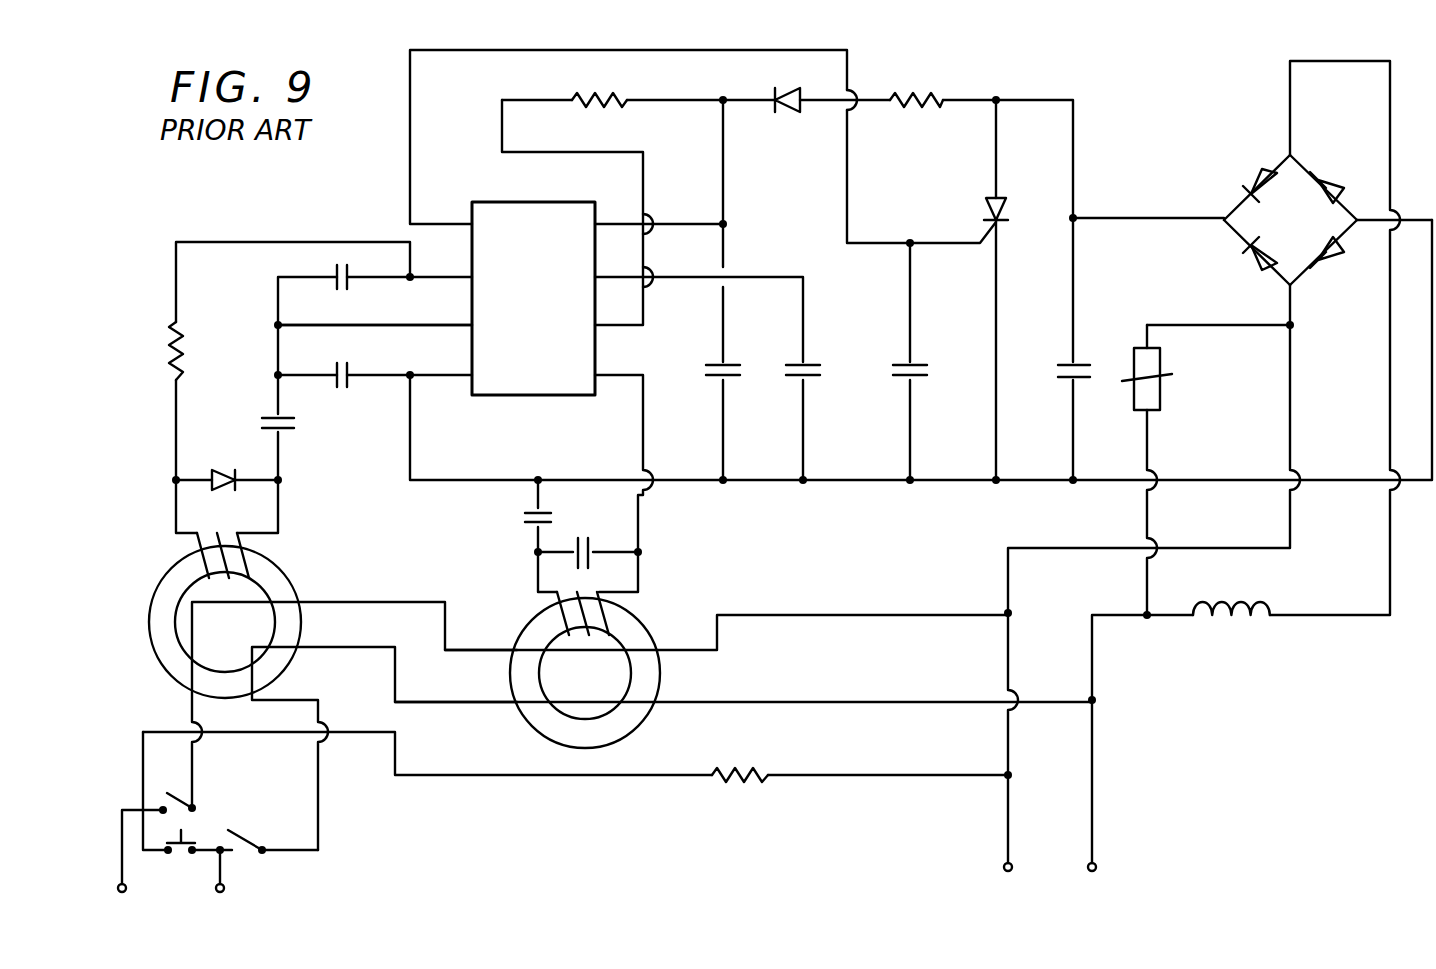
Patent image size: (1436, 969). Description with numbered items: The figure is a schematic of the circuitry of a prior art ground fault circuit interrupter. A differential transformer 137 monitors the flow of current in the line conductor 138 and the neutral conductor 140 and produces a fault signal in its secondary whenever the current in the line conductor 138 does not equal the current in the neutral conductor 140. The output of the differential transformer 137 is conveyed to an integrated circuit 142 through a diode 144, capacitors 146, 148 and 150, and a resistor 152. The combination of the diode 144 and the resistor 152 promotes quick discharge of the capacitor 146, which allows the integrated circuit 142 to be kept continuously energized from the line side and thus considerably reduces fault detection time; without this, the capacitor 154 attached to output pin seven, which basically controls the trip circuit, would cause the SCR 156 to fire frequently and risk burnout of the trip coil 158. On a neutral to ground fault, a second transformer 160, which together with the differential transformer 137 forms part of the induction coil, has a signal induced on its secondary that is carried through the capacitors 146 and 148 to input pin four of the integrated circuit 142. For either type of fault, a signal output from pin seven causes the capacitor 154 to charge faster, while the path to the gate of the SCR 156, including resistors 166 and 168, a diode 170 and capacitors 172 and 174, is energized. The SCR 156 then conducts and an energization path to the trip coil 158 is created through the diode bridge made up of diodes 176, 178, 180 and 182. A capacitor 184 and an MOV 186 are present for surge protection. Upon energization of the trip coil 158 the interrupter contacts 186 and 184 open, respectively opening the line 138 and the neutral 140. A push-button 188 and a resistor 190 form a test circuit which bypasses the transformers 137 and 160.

The differential transformer 137 is at (270, 563).
The line conductor 138 is at (463, 704).
The neutral conductor 140 is at (480, 648).
The integrated circuit 142 is at (507, 210).
The diode 144 is at (215, 463).
The capacitor 146 is at (296, 428).
The capacitor 148 is at (341, 388).
The capacitor 150 is at (341, 290).
The resistor 152 is at (184, 350).
The capacitor 154 is at (785, 370).
The SCR 156 is at (1000, 212).
The trip coil 158 is at (1227, 628).
The transformer 160 is at (625, 618).
The resistor 166 is at (616, 100).
The resistor 168 is at (936, 100).
The diode 170 is at (790, 108).
The capacitor 172 is at (705, 370).
The capacitor 174 is at (892, 370).
The diode 176 is at (1345, 163).
The diode 178 is at (1250, 178).
The diode 180 is at (1258, 262).
The diode 182 is at (1330, 262).
The capacitor 184 is at (1058, 365).
The MOV 186 is at (1160, 360).
The push-button 188 is at (178, 853).
The resistor 190 is at (748, 772).